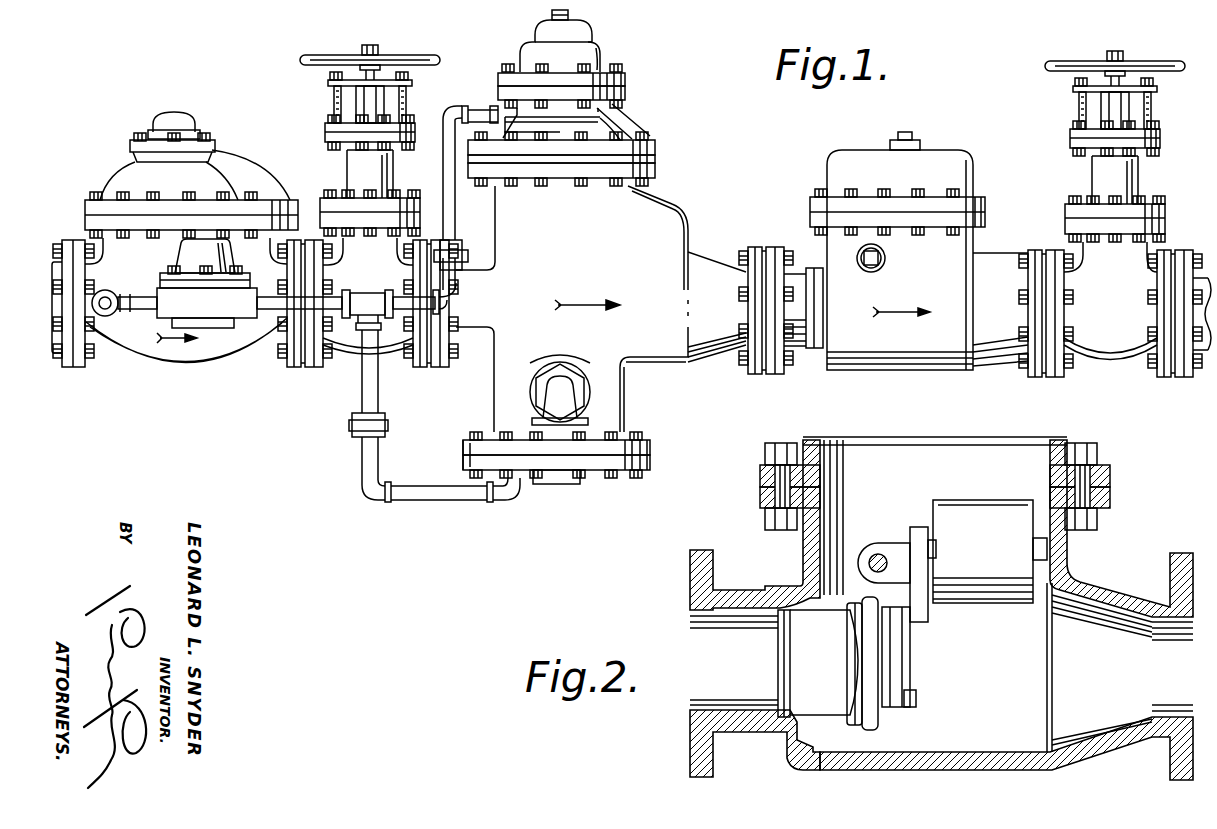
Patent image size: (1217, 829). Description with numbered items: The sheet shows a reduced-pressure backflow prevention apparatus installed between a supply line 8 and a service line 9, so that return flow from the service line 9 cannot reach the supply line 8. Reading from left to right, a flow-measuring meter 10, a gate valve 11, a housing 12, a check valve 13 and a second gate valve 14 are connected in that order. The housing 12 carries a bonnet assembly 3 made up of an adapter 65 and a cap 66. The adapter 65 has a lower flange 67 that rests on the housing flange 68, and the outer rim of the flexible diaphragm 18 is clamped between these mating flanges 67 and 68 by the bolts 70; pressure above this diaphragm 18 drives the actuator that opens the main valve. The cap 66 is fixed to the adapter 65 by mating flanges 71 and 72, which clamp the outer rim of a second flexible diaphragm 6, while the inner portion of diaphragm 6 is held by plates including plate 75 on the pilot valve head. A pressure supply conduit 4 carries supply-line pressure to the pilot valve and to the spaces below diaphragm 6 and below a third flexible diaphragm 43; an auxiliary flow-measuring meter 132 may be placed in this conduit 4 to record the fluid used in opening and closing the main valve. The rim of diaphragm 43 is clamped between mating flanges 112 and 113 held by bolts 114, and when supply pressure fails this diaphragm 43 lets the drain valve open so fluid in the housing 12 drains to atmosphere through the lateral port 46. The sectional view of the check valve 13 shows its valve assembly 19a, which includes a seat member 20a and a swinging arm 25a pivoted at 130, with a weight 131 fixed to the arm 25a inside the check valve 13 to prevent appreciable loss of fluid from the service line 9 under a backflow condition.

In FIG. 1, the supply line 8 is at (56, 340).
In FIG. 1, the flow-measuring meter 10 is at (128, 171).
In FIG. 1, the auxiliary flow-measuring meter 132 is at (222, 320).
In FIG. 1, the gate valve 11 is at (338, 171).
In FIG. 1, the pressure supply conduit 4 is at (468, 107).
In FIG. 1, the plate 75 is at (540, 65).
In FIG. 1, the flange 71 is at (498, 79).
In FIG. 1, the flange 72 is at (498, 93).
In FIG. 1, the cap 66 is at (590, 49).
In FIG. 1, the second flexible diaphragm 6 is at (627, 90).
In FIG. 1, the adapter 65 is at (604, 130).
In FIG. 1, the bonnet assembly 3 is at (622, 137).
In FIG. 1, the lower flange 67 is at (655, 150).
In FIG. 1, the flexible diaphragm 18 is at (655, 160).
In FIG. 1, the flange 68 is at (655, 172).
In FIG. 1, the bolts 70 is at (582, 186).
In FIG. 1, the housing 12 is at (683, 202).
In FIG. 1, the check valve 13 is at (934, 160).
In FIG. 2, the check valve 13 is at (1102, 580).
In FIG. 1, the gate valve 14 is at (1083, 191).
In FIG. 1, the service line 9 is at (1200, 358).
In FIG. 1, the third flexible diaphragm 43 is at (465, 453).
In FIG. 1, the lateral port 46 is at (566, 426).
In FIG. 1, the flange 112 is at (652, 448).
In FIG. 1, the flange 113 is at (652, 463).
In FIG. 1, the bolts 114 is at (636, 480).
In FIG. 2, the pivot 130 is at (878, 556).
In FIG. 2, the weight 131 is at (990, 551).
In FIG. 2, the swinging arm 25a is at (912, 600).
In FIG. 2, the valve assembly 19a is at (890, 650).
In FIG. 2, the seat member 20a is at (832, 612).